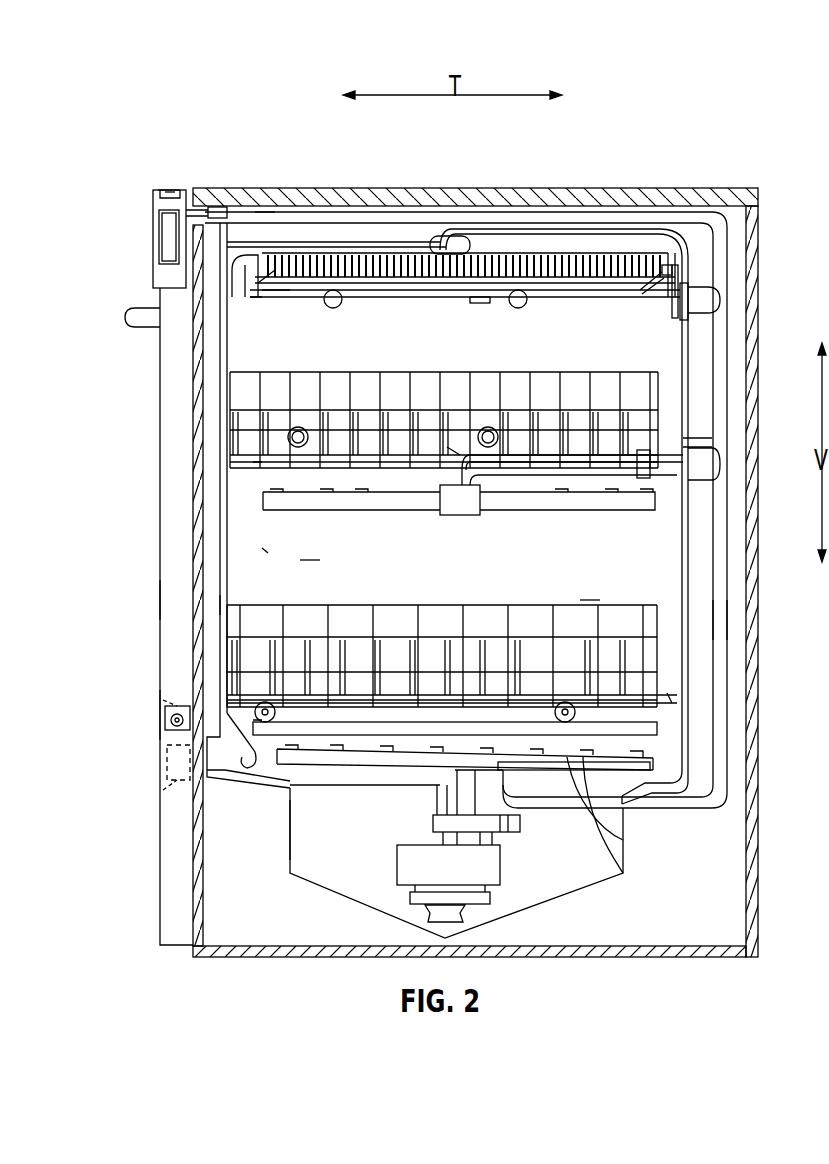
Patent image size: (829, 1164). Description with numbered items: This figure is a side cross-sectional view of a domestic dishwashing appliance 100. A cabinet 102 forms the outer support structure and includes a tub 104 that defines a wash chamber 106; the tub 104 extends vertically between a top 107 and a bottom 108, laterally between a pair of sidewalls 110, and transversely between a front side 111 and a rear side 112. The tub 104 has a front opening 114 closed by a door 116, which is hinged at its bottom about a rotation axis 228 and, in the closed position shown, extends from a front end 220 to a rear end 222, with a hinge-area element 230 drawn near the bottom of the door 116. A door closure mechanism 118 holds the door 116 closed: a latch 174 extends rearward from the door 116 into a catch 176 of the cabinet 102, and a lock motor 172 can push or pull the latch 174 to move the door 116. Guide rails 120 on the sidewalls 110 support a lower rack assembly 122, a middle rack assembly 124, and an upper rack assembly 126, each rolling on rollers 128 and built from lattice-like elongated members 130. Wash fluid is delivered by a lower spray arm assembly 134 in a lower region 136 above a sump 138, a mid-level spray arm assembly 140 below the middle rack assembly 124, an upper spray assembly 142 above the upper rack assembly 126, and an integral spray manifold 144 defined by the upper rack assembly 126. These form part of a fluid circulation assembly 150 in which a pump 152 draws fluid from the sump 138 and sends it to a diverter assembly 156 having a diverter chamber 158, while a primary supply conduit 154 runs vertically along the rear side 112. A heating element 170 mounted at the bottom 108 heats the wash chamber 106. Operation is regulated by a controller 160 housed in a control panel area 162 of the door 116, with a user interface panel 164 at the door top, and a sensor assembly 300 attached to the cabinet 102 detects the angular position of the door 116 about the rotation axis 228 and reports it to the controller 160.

The dishwashing appliance 100 is at (652, 70).
The cabinet 102 is at (762, 243).
The tub 104 is at (358, 553).
The wash chamber 106 is at (262, 546).
The top 107 is at (430, 243).
The bottom 108 is at (672, 761).
The sidewalls 110 is at (573, 272).
The front side 111 is at (242, 247).
The rear side 112 is at (662, 345).
The front opening 114 is at (185, 234).
The door 116 is at (158, 600).
The door closure mechanism 118 is at (266, 210).
The guide rails 120 is at (348, 303).
The lower rack assembly 122 is at (583, 594).
The middle rack assembly 124 is at (255, 348).
The upper rack assembly 126 is at (407, 252).
The rollers 128 is at (365, 300).
The elongated members 130 is at (640, 408).
The lower spray arm assembly 134 is at (600, 820).
The lower region 136 is at (680, 728).
The sump 138 is at (290, 790).
The mid-level spray arm assembly 140 is at (495, 508).
The upper spray assembly 142 is at (480, 303).
The integral spray manifold 144 is at (590, 270).
The fluid circulation assembly 150 is at (378, 860).
The pump 152 is at (485, 870).
The primary supply conduit 154 is at (727, 620).
The diverter assembly 156 is at (426, 822).
The diverter chamber 158 is at (508, 830).
The controller 160 is at (152, 233).
The control panel area 162 is at (166, 183).
The user interface panel 164 is at (171, 184).
The heating element 170 is at (605, 845).
The lock motor 172 is at (220, 224).
The latch 174 is at (200, 232).
The catch 176 is at (223, 206).
The front end 220 is at (140, 694).
The rear end 222 is at (218, 603).
The rotation axis 228 is at (178, 727).
The hinge bracket 230 is at (178, 735).
The sensor assembly 300 is at (178, 702).